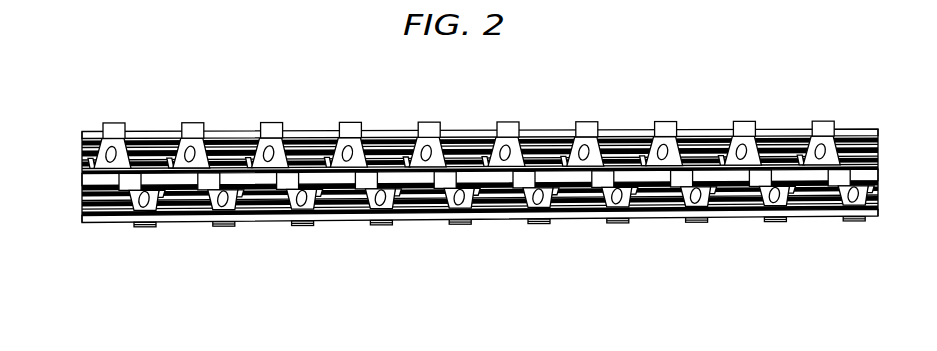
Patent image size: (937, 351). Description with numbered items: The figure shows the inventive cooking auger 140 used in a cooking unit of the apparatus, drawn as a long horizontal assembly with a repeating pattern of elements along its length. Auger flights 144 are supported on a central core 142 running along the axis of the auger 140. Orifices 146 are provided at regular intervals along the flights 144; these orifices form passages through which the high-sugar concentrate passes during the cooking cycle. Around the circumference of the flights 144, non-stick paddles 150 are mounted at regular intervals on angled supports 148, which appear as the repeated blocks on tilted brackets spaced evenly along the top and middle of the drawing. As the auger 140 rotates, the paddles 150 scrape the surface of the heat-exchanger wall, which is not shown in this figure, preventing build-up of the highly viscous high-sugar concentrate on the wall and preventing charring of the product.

The cooking auger 140 is at (304, 267).
The central core 142 is at (82, 178).
The auger flights 144 is at (82, 152).
The orifices 146 is at (135, 209).
The angled supports 148 is at (145, 131).
The non-stick paddles 150 is at (197, 123).